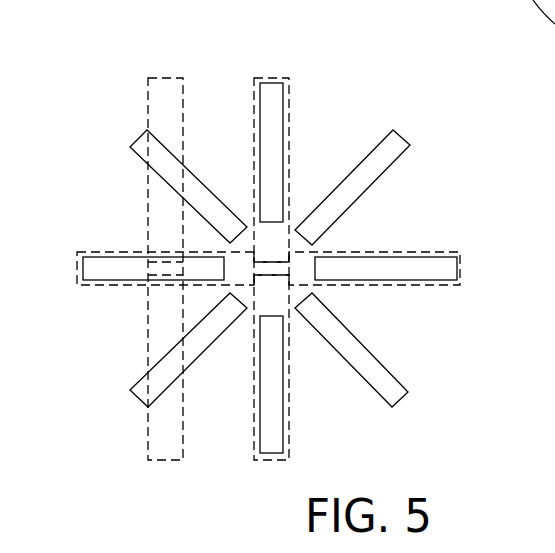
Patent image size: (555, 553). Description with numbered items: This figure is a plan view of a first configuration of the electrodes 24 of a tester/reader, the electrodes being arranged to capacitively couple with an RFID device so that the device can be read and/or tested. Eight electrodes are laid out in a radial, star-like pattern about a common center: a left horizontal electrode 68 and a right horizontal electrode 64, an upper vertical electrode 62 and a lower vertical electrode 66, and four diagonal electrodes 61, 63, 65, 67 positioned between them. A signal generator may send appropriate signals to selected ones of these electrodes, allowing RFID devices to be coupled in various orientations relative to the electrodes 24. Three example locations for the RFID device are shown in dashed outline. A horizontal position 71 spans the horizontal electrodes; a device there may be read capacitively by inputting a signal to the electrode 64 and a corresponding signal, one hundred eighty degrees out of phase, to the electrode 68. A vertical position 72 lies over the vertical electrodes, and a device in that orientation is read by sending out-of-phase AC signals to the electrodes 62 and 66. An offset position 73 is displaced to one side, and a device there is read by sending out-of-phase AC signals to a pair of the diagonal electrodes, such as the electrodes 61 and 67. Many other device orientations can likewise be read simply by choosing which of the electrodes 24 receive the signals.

The electrodes 24 is at (110, 112).
The diagonal electrode 61 is at (133, 147).
The electrode 62 is at (270, 88).
The diagonal electrode 63 is at (393, 145).
The electrode 64 is at (425, 267).
The diagonal electrode 65 is at (392, 383).
The electrode 66 is at (272, 440).
The diagonal electrode 67 is at (130, 390).
The electrode 68 is at (108, 277).
The RFID device position 71 is at (77, 262).
The RFID device position 72 is at (289, 118).
The RFID device position 73 is at (162, 78).